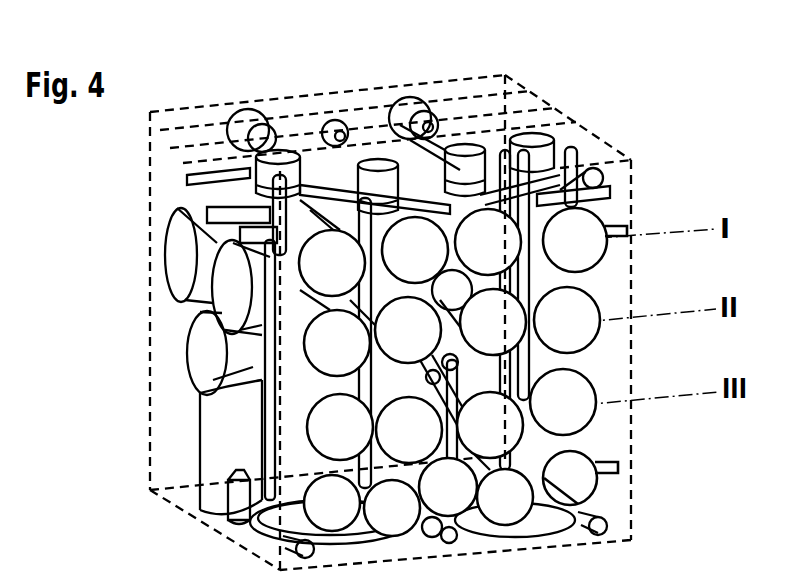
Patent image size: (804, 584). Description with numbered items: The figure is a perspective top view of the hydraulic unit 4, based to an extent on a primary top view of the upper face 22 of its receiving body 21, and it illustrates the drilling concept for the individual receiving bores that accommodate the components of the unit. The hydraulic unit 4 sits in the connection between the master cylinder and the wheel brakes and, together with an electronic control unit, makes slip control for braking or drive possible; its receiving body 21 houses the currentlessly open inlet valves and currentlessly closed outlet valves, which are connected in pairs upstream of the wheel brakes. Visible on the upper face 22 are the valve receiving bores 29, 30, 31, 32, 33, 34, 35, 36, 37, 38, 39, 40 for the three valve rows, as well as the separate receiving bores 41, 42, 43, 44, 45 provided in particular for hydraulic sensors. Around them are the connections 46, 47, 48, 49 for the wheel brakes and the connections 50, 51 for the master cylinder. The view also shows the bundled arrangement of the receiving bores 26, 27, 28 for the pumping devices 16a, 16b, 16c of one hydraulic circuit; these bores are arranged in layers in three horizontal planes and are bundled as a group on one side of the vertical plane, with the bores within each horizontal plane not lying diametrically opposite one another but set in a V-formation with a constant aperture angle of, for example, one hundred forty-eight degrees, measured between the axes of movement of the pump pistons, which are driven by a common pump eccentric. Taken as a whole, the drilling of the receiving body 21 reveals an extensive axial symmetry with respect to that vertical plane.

The hydraulic unit 4 is at (636, 146).
The pumping device 16a is at (211, 270).
The pumping device 16b is at (186, 343).
The pumping device 16c is at (166, 215).
The receiving body 21 is at (578, 135).
The upper face 22 is at (616, 273).
The receiving bore 26 is at (186, 302).
The receiving bore 27 is at (190, 375).
The receiving bore 28 is at (164, 250).
The valve receiving bore 29 is at (562, 254).
The valve receiving bore 30 is at (475, 256).
The valve receiving bore 31 is at (402, 264).
The valve receiving bore 32 is at (319, 277).
The valve receiving bore 33 is at (554, 334).
The valve receiving bore 34 is at (480, 336).
The valve receiving bore 35 is at (395, 344).
The valve receiving bore 36 is at (324, 357).
The valve receiving bore 37 is at (550, 416).
The valve receiving bore 38 is at (477, 439).
The valve receiving bore 39 is at (396, 444).
The valve receiving bore 40 is at (327, 441).
The receiving bore for hydraulic sensors 41 is at (558, 491).
The receiving bore for hydraulic sensors 42 is at (493, 510).
The receiving bore for hydraulic sensors 43 is at (436, 500).
The receiving bore for hydraulic sensors 44 is at (380, 521).
The receiving bore for hydraulic sensors 45 is at (320, 516).
The wheel brake connection 46 is at (546, 138).
The wheel brake connection 47 is at (470, 148).
The wheel brake connection 48 is at (366, 160).
The wheel brake connection 49 is at (297, 157).
The master cylinder connection 50 is at (406, 98).
The master cylinder connection 51 is at (250, 140).